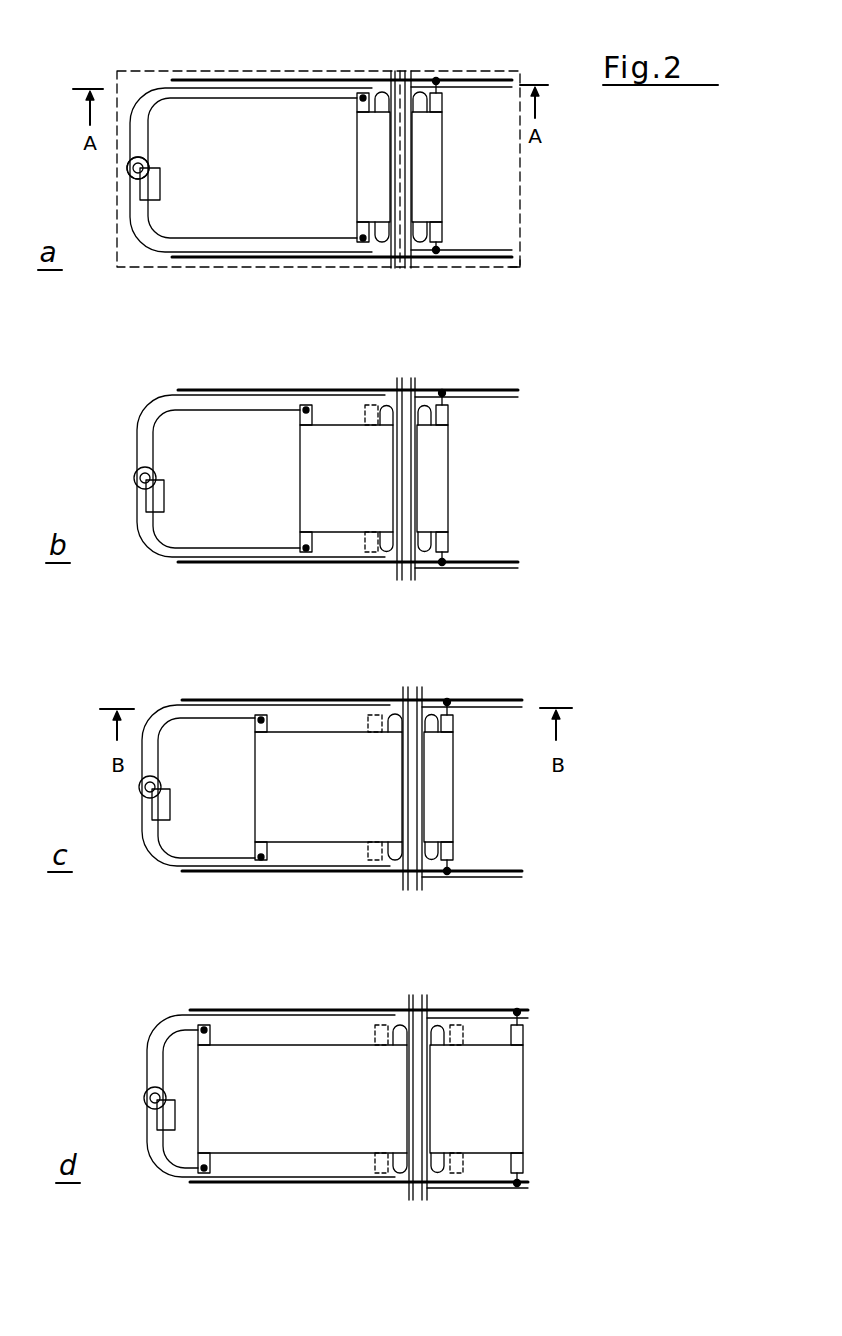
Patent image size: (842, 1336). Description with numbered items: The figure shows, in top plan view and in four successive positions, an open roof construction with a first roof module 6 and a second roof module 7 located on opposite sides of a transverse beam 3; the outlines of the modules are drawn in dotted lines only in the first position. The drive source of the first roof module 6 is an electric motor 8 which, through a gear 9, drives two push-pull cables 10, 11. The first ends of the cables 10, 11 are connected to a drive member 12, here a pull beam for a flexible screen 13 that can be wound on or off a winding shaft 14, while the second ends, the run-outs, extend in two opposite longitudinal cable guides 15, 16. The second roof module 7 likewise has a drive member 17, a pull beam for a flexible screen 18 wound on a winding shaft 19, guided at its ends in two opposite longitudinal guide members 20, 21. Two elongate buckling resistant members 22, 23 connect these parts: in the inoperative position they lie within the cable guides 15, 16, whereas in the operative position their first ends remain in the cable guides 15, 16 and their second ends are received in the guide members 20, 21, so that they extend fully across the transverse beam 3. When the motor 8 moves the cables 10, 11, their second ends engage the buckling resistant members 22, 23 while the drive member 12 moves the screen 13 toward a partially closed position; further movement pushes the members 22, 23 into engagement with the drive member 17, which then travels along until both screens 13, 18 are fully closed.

The transverse beam 3 is at (412, 1196).
The first roof module 6 is at (232, 268).
The second roof module 7 is at (515, 272).
The electric motor 8 is at (172, 1110).
The gear 9 is at (145, 161).
The push-pull cable 10 is at (290, 1188).
The push-pull cable 11 is at (297, 1012).
The drive member 12 is at (210, 1038).
The movable member 13 is at (368, 160).
The winding shaft 14 is at (360, 236).
The longitudinal cable guide 15 is at (226, 1188).
The longitudinal cable guide 16 is at (236, 1010).
The drive member 17 is at (511, 1035).
The movable member 18 is at (430, 163).
The winding shaft 19 is at (444, 232).
The longitudinal guide member 20 is at (487, 699).
The longitudinal guide member 21 is at (492, 878).
The elongate buckling resistant member 22 is at (453, 1010).
The elongate buckling resistant member 23 is at (472, 1190).